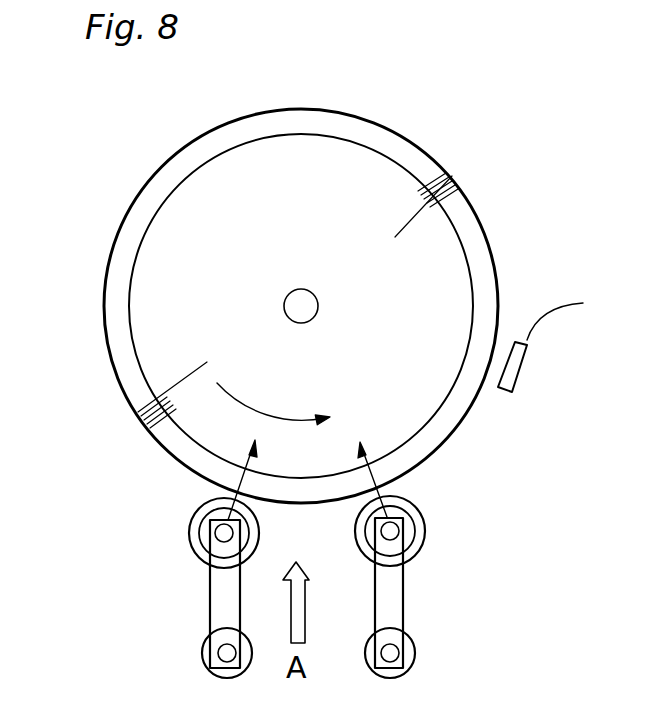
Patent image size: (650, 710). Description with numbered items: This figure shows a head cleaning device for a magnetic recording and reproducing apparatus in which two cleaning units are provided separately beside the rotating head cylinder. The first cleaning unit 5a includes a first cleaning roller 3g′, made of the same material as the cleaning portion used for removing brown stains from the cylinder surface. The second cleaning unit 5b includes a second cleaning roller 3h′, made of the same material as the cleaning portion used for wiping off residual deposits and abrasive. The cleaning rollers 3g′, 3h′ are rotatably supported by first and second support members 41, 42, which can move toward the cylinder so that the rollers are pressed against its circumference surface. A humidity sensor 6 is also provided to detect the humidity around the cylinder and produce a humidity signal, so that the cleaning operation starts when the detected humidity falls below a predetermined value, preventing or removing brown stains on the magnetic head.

The humidity sensor 6 is at (521, 366).
The first cleaning roller 3g′ is at (190, 522).
The second cleaning roller 3h′ is at (420, 525).
The first support member 41 is at (180, 599).
The second support member 42 is at (441, 598).
The first cleaning unit 5a is at (140, 585).
The second cleaning unit 5b is at (476, 574).